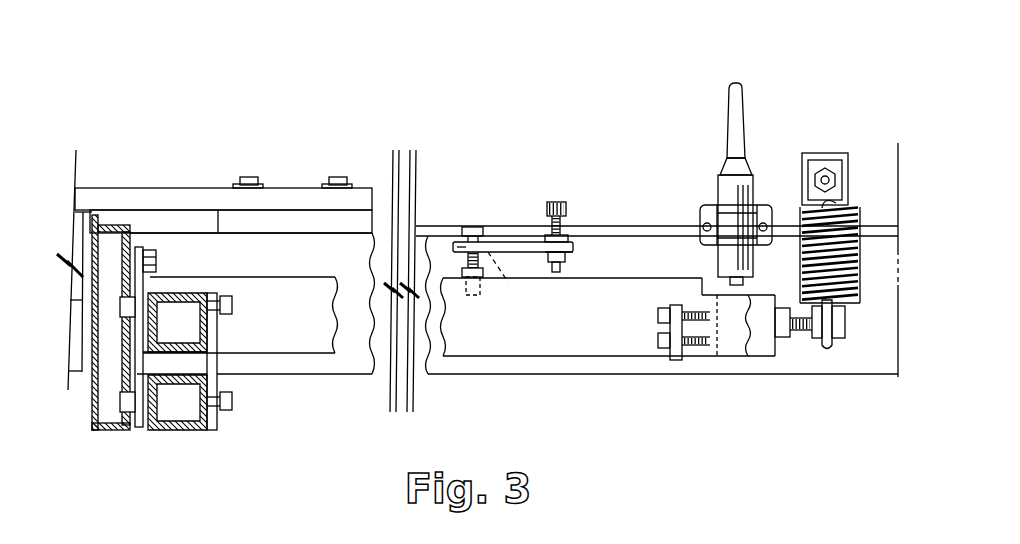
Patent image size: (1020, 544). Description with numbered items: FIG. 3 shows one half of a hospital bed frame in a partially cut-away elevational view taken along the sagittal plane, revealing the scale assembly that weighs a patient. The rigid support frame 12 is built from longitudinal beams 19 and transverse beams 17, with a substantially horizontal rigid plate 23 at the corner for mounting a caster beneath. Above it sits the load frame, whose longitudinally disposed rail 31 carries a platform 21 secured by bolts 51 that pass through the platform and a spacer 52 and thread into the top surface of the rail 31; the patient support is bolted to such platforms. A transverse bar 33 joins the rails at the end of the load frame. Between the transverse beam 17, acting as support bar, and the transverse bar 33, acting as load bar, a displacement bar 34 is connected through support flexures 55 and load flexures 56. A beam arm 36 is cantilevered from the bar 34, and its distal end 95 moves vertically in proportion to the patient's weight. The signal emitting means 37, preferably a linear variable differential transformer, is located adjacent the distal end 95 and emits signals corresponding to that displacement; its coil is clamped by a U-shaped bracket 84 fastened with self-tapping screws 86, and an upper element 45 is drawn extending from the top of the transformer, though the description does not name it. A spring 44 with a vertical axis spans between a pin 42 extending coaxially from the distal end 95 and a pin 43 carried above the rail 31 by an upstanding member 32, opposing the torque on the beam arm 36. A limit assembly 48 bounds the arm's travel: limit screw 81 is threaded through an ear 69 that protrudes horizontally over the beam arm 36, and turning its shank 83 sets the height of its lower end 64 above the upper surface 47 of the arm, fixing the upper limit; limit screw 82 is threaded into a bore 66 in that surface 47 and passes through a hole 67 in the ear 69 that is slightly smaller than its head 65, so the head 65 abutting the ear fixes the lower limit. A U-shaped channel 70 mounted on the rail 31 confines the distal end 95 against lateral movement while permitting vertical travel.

The support frame 12 is at (90, 412).
The transverse beams 17 is at (117, 431).
The longitudinal beams 19 is at (417, 375).
The platform 21 is at (118, 193).
The rigid plates 23 is at (83, 237).
The rail 31 is at (311, 271).
The upstanding member 32 is at (845, 205).
The transverse bar 33 is at (183, 425).
The bar 34 is at (195, 293).
The beam arm 36 is at (274, 331).
The signal emitting means 37 is at (730, 190).
The pin 42 is at (840, 331).
The pin 43 is at (820, 175).
The spring 44 is at (860, 265).
The lever handle 45 is at (738, 115).
The upper surface 47 is at (660, 278).
The limit assembly 48 is at (552, 269).
The bolts 51 is at (327, 177).
The spacer 52 is at (358, 222).
The support flexures 55 is at (215, 360).
The load flexures 56 is at (140, 268).
The lower end 64 is at (565, 256).
The head 65 is at (471, 226).
The threaded bore 66 is at (480, 296).
The hole 67 is at (502, 281).
The ear 69 is at (513, 245).
The U-shaped channel 70 is at (733, 366).
The limit screw 81 is at (560, 204).
The limit screw 82 is at (467, 258).
The shank 83 is at (548, 266).
The U-shaped bracket 84 is at (703, 213).
The self-tapping screws 86 is at (708, 247).
The distal end 95 is at (765, 340).